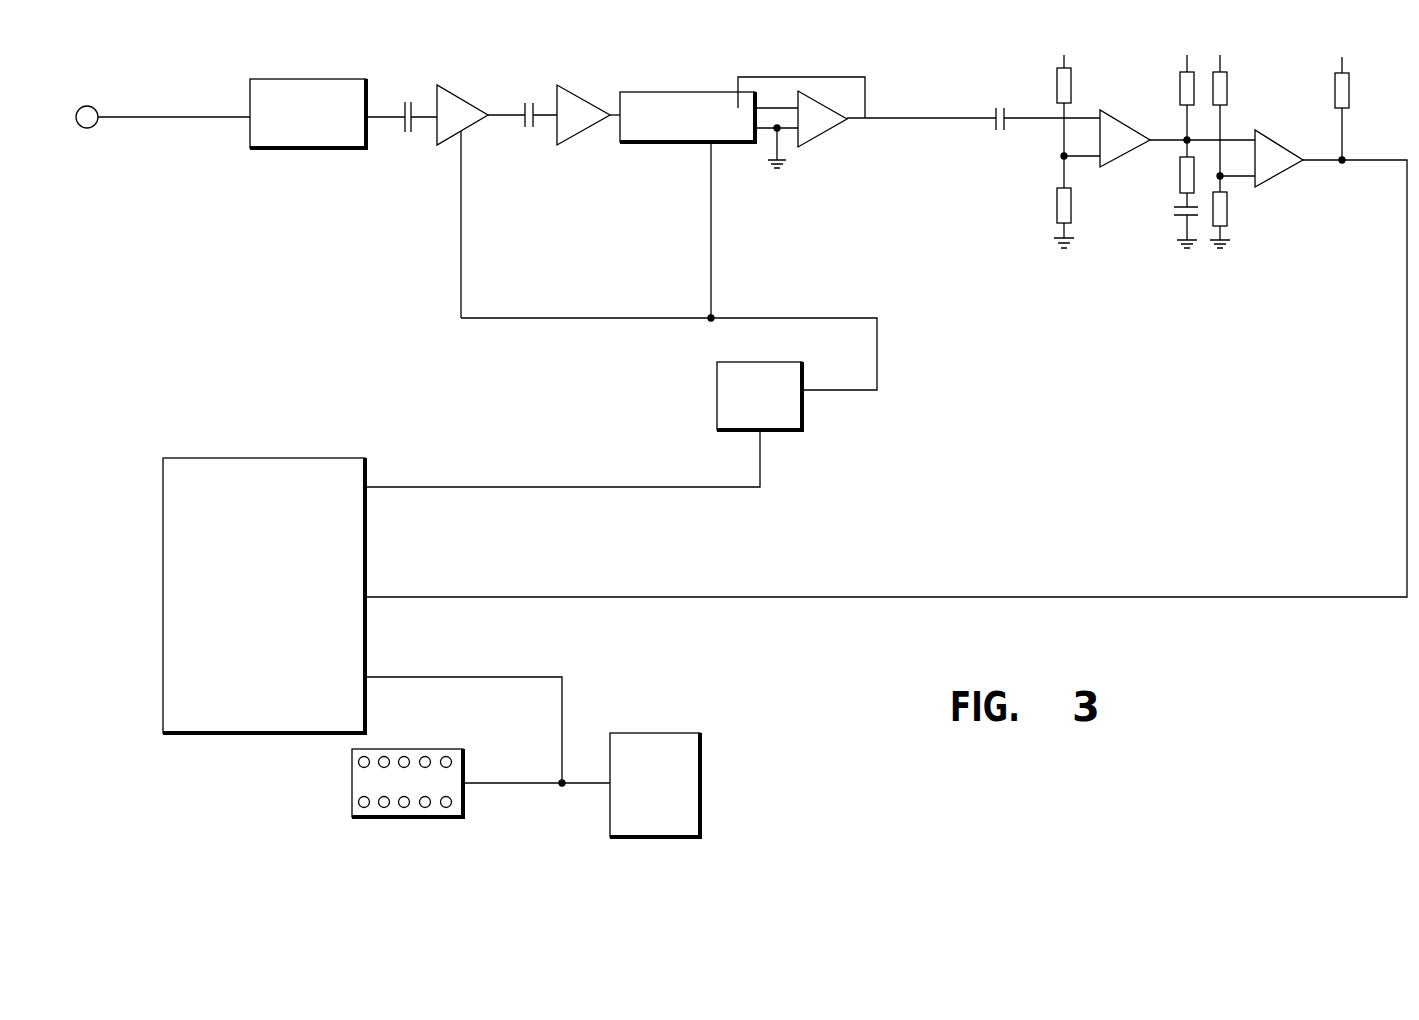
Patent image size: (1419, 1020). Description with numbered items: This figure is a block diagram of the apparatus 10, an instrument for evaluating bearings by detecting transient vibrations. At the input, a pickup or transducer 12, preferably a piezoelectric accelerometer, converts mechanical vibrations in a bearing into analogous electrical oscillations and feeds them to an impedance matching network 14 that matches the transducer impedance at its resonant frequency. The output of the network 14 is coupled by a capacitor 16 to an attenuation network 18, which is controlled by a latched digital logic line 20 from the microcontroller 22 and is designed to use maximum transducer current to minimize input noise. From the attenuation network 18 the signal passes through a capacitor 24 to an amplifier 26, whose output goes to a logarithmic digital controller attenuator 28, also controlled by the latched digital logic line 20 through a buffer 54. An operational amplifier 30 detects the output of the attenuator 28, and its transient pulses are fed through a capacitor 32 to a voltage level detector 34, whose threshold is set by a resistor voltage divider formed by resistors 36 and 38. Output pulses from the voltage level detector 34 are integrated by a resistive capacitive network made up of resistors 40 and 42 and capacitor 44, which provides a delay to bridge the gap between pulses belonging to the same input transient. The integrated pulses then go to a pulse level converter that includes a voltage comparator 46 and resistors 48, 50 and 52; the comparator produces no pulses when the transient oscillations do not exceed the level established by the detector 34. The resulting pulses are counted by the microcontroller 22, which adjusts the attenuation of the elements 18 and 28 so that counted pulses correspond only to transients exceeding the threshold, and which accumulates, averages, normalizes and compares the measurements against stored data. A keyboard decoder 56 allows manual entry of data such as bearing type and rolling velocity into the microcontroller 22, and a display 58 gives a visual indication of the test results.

The apparatus 10 is at (1302, 48).
The transducer 12 is at (83, 106).
The impedance matching network 14 is at (315, 79).
The capacitor 16 is at (414, 100).
The attenuation network 18 is at (455, 98).
The latched digital logic line 20 is at (839, 318).
The microcontroller 22 is at (318, 605).
The capacitor 24 is at (534, 103).
The amplifier 26 is at (570, 92).
The logarithmic digital controller attenuator 28 is at (707, 92).
The operational amplifier 30 is at (829, 130).
The capacitor 32 is at (994, 110).
The voltage level detector 34 is at (1137, 129).
The resistor 36 is at (1071, 217).
The resistor 38 is at (1071, 86).
The resistor 40 is at (1180, 90).
The resistor 42 is at (1180, 183).
The capacitor 44 is at (1178, 217).
The voltage comparator 46 is at (1284, 146).
The resistor 48 is at (1228, 220).
The resistor 50 is at (1228, 92).
The resistor 52 is at (1349, 94).
The buffer 54 is at (770, 362).
The keyboard decoder 56 is at (428, 749).
The display 58 is at (672, 733).